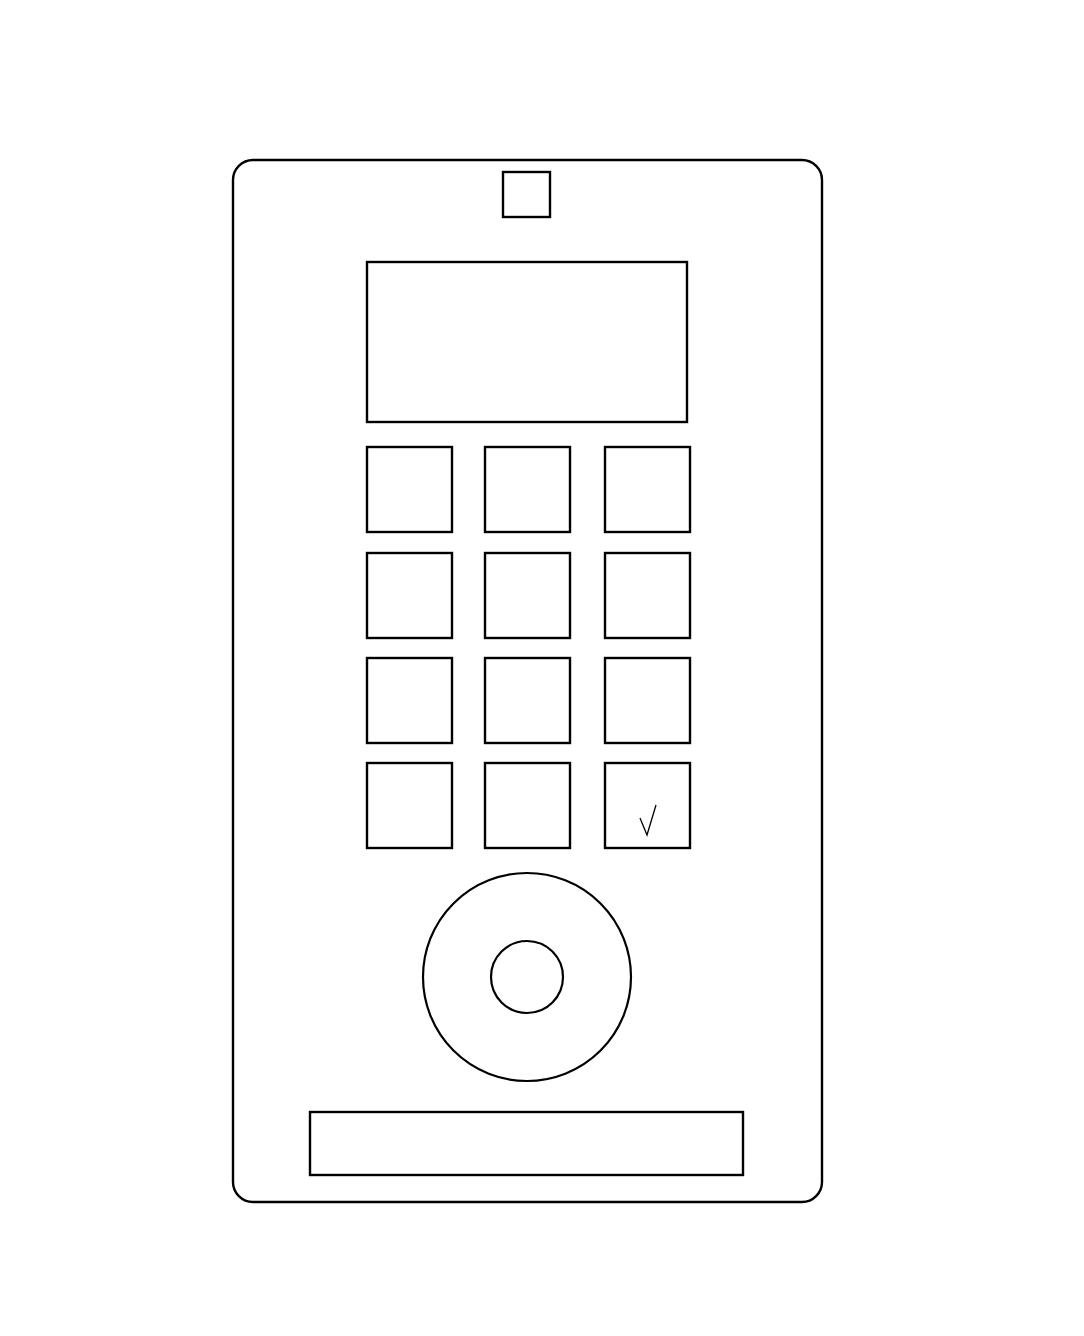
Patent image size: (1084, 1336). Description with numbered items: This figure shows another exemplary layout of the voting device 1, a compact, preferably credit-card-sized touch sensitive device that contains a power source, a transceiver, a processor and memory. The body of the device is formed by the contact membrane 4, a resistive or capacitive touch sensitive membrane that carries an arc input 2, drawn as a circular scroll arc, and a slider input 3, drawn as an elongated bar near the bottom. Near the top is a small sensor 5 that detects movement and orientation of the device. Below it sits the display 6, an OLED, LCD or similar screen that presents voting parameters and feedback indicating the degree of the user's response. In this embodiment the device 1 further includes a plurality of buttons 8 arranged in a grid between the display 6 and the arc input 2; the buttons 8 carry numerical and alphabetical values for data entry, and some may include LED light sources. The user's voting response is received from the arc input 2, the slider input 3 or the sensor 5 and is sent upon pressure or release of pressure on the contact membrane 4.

The voting device 1 is at (837, 127).
The arc input 2 is at (588, 960).
The slider input 3 is at (675, 1158).
The contact membrane 4 is at (255, 568).
The sensor 5 is at (527, 195).
The display 6 is at (368, 262).
The plurality of buttons 8 is at (645, 490).